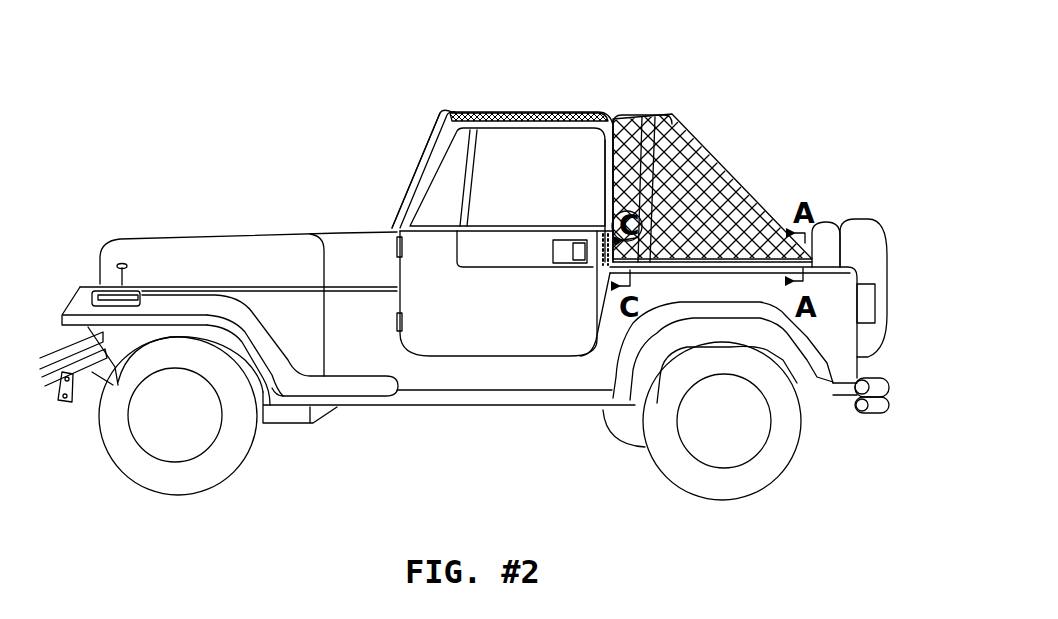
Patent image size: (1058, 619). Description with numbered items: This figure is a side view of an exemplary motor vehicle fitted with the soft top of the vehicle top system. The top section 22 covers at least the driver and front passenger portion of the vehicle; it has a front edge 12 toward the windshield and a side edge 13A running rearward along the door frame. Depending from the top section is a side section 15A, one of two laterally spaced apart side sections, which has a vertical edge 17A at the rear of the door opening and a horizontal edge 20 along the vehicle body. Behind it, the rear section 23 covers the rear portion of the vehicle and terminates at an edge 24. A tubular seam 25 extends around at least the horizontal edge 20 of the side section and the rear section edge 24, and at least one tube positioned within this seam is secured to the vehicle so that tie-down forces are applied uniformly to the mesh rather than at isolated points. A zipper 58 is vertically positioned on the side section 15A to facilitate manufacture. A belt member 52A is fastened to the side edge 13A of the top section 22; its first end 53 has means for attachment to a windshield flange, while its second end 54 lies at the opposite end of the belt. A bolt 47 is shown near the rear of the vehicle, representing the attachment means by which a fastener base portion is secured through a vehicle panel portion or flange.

The front edge 12 is at (458, 117).
The side edge 13A is at (517, 115).
The top section 22 is at (578, 116).
The side section 15A is at (675, 115).
The zipper 58 is at (700, 170).
The rear section 23 is at (737, 190).
The rear section edge 24 is at (824, 262).
The bolt 47 is at (824, 265).
The first end 53 is at (445, 118).
The belt member 52A is at (533, 127).
The side section vertical edge 17A is at (612, 158).
The second end 54 is at (604, 262).
The horizontal edge 20 is at (690, 260).
The tubular seam 25 is at (760, 253).